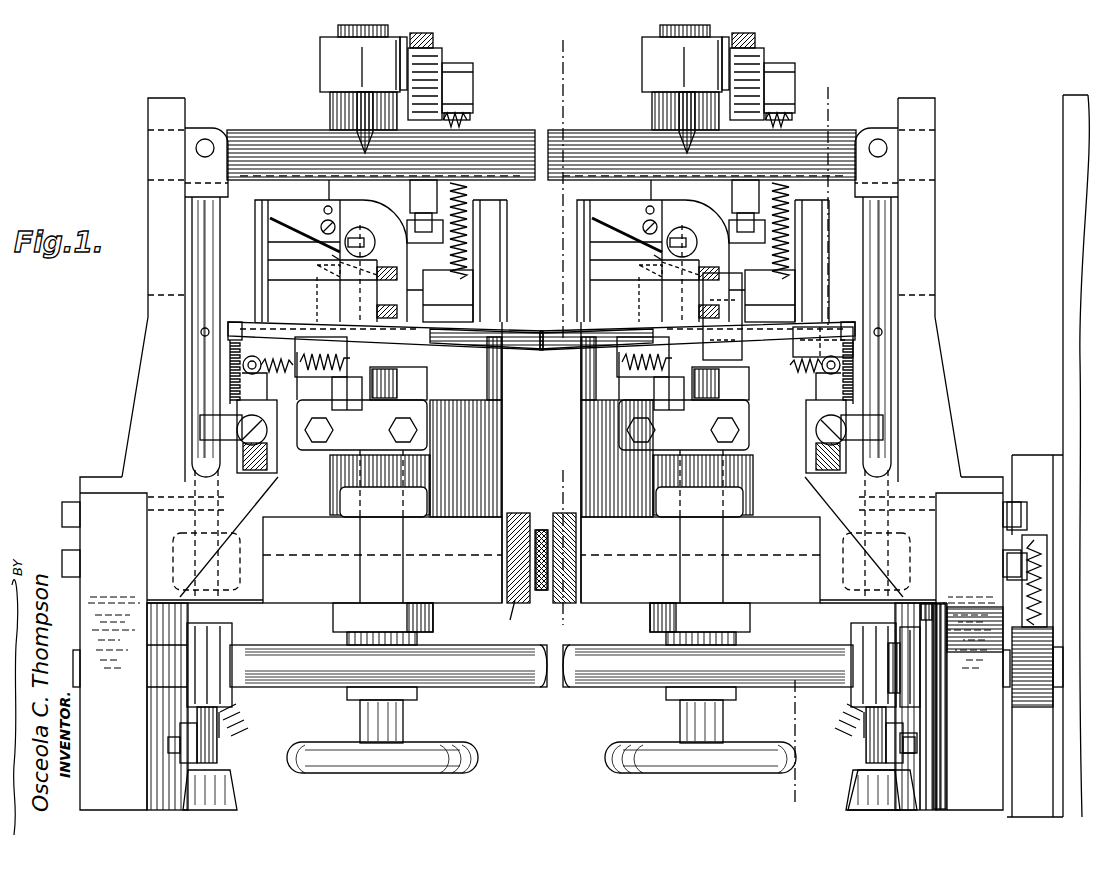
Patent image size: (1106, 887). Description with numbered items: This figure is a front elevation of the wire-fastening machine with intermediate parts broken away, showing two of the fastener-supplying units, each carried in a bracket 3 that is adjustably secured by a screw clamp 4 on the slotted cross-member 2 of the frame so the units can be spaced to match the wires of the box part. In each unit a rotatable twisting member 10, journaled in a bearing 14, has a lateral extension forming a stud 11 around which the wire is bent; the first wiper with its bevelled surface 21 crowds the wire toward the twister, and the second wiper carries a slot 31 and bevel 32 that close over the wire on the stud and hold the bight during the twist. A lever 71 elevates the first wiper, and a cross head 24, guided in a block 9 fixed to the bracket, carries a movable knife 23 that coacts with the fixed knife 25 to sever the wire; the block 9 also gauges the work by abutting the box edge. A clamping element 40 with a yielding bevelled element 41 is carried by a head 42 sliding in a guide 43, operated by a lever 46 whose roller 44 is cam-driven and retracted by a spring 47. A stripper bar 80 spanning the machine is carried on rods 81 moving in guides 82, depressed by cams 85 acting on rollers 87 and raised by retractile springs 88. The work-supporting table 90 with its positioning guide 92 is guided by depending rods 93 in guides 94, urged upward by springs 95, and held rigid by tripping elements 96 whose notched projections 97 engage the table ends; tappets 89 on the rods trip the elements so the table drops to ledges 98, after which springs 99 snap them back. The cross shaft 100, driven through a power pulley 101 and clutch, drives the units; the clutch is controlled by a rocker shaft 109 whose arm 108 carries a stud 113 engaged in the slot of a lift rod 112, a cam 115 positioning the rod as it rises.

The slotted cross-member 2 is at (565, 61).
The bracket 3 is at (585, 428).
The screw clamp 4 is at (830, 95).
The block 9 is at (272, 293).
The twisting member 10 is at (364, 240).
The forming stud 11 is at (354, 64).
The bearing 14 is at (420, 300).
The bevelled surface 21 is at (368, 266).
The movable knife 23 is at (320, 296).
The cross head 24 is at (326, 360).
The fixed knife 25 is at (332, 240).
The slot 31 is at (346, 228).
The bevel 32 is at (362, 232).
The clamping element 40 is at (345, 125).
The yielding bevelled element 41 is at (360, 144).
The head 42 is at (338, 31).
The guide 43 is at (322, 56).
The roller 44 is at (422, 185).
The lever 46 is at (433, 46).
The spring 47 is at (467, 124).
The lever 71 is at (405, 388).
The stripper bar 80 is at (528, 132).
The rod 81 is at (212, 228).
The guide 82 is at (155, 190).
The cam 85 is at (190, 455).
The roller 87 is at (190, 527).
The retractile spring 88 is at (245, 708).
The tappet 89 is at (201, 332).
The work-supporting table 90 is at (514, 331).
The positioning guide 92 is at (742, 320).
The depending rod 93 is at (262, 492).
The guide 94 is at (280, 452).
The spring 95 is at (243, 366).
The tripping element 96 is at (262, 412).
The notched projection 97 is at (242, 328).
The ledge 98 is at (228, 346).
The spring 99 is at (296, 378).
The shaft 100 is at (516, 527).
The power pulley 101 is at (1063, 276).
The arm 108 is at (947, 608).
The rocker shaft 109 is at (528, 688).
The lift rod 112 is at (930, 749).
The stud 113 is at (950, 680).
The cam 115 is at (928, 622).